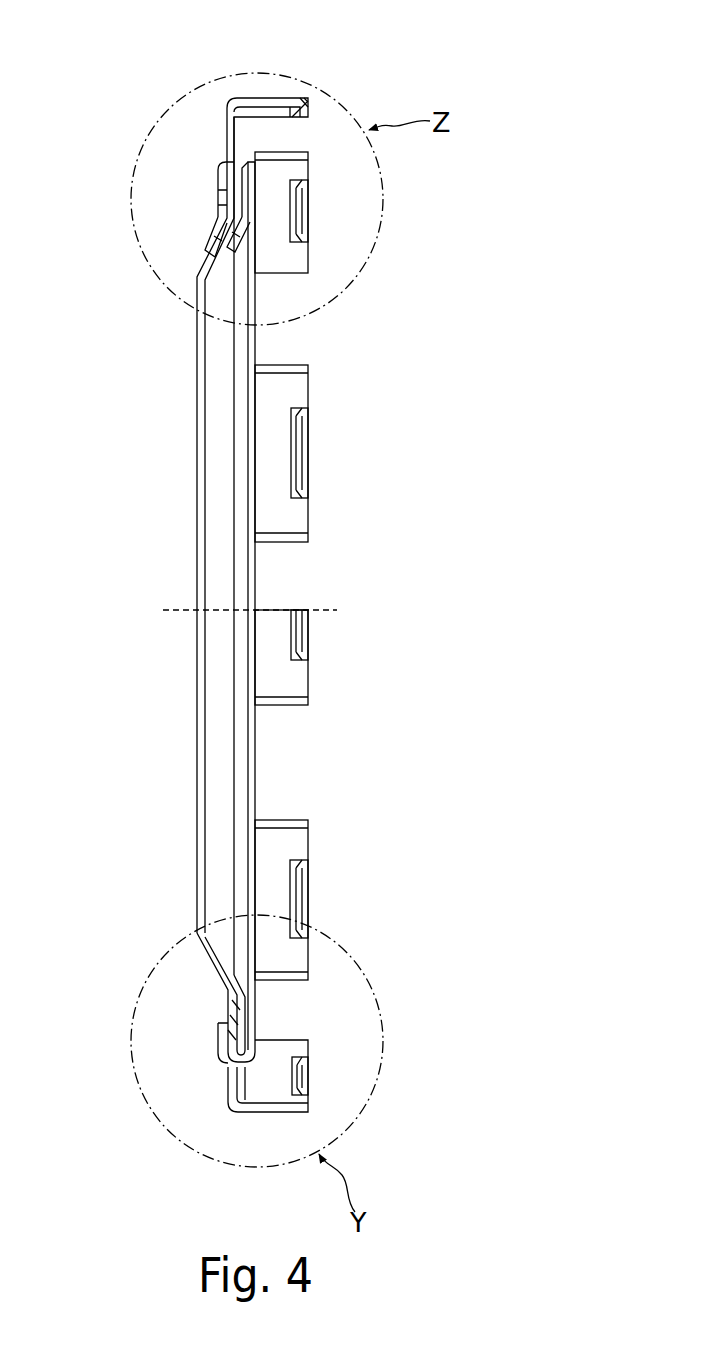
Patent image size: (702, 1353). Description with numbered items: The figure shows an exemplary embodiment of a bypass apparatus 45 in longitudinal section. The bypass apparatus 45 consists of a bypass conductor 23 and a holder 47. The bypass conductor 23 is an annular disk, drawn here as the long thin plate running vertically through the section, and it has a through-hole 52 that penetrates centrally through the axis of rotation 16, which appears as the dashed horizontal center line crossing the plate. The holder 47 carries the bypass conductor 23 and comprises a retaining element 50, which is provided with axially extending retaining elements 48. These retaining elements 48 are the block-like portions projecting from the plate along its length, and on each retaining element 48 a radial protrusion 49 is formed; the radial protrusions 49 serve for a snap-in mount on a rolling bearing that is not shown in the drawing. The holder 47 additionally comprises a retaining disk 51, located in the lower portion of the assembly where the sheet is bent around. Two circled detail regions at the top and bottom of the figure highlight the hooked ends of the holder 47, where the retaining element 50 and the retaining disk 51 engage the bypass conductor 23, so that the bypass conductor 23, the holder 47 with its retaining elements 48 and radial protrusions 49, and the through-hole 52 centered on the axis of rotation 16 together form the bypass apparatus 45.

The axis of rotation 16 is at (328, 610).
The bypass conductor 23 is at (218, 410).
The bypass apparatus 45 is at (459, 302).
The holder 47 is at (227, 132).
The retaining elements 48 is at (250, 97).
The radial protrusion 49 is at (307, 118).
The retaining element 50 is at (233, 190).
The retaining disk 51 is at (262, 995).
The through-hole 52 is at (200, 505).